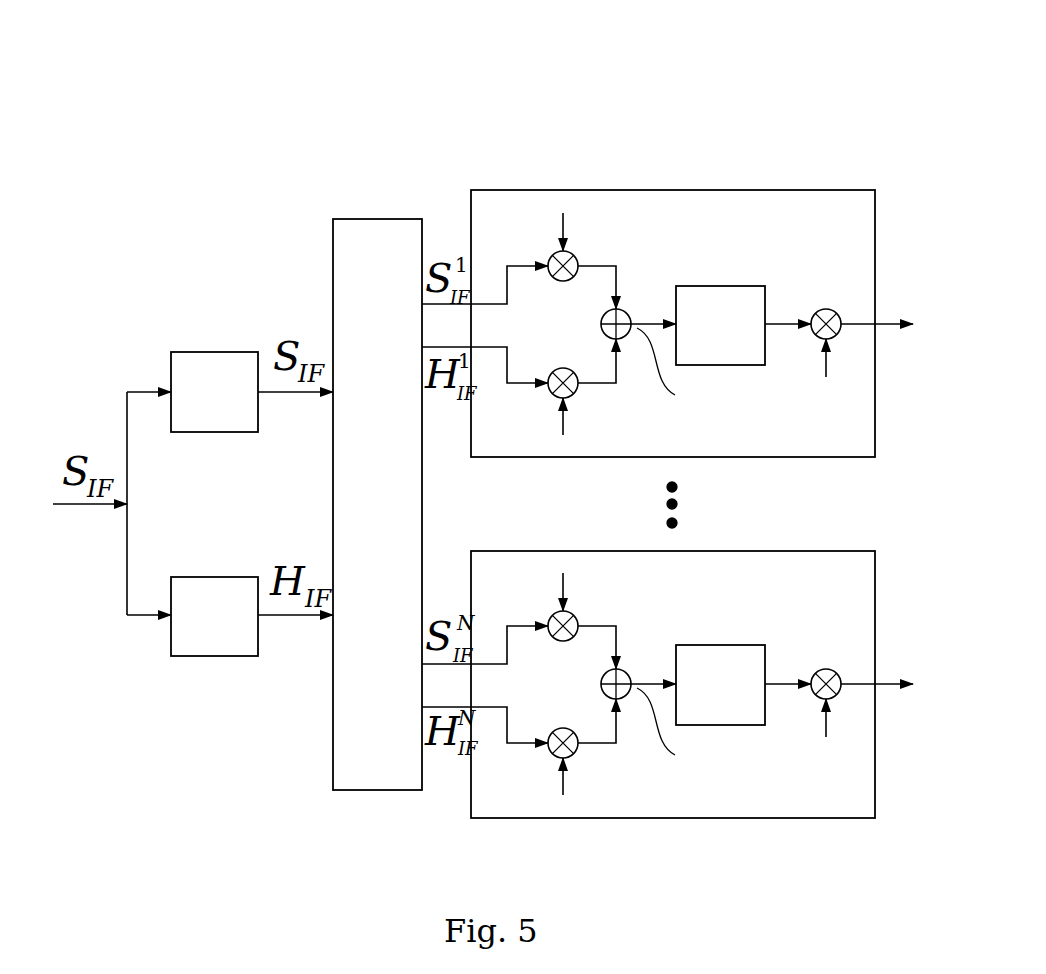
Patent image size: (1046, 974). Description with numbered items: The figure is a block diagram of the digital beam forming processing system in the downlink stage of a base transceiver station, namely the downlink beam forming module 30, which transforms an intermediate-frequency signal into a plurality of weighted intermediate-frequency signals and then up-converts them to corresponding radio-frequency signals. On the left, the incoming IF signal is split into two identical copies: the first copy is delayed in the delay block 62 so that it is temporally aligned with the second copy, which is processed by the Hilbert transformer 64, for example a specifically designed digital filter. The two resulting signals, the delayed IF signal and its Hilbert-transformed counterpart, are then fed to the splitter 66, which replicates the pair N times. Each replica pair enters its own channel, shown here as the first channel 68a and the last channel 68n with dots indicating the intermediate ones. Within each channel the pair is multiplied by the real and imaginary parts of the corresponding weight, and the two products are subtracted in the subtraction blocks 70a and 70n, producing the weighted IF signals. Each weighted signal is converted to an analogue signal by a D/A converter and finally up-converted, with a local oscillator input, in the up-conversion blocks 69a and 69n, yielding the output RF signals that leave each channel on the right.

The downlink beam forming module 30 is at (232, 127).
The delay block 62 is at (212, 372).
The Hilbert transformer 64 is at (200, 640).
The splitter 66 is at (370, 240).
The weighting and up-conversion channel 68a is at (690, 205).
The weighting and up-conversion channel 68n is at (712, 806).
The up-conversion block 69a is at (830, 310).
The up-conversion block 69n is at (830, 670).
The subtraction block 70a is at (631, 318).
The subtraction block 70n is at (632, 678).